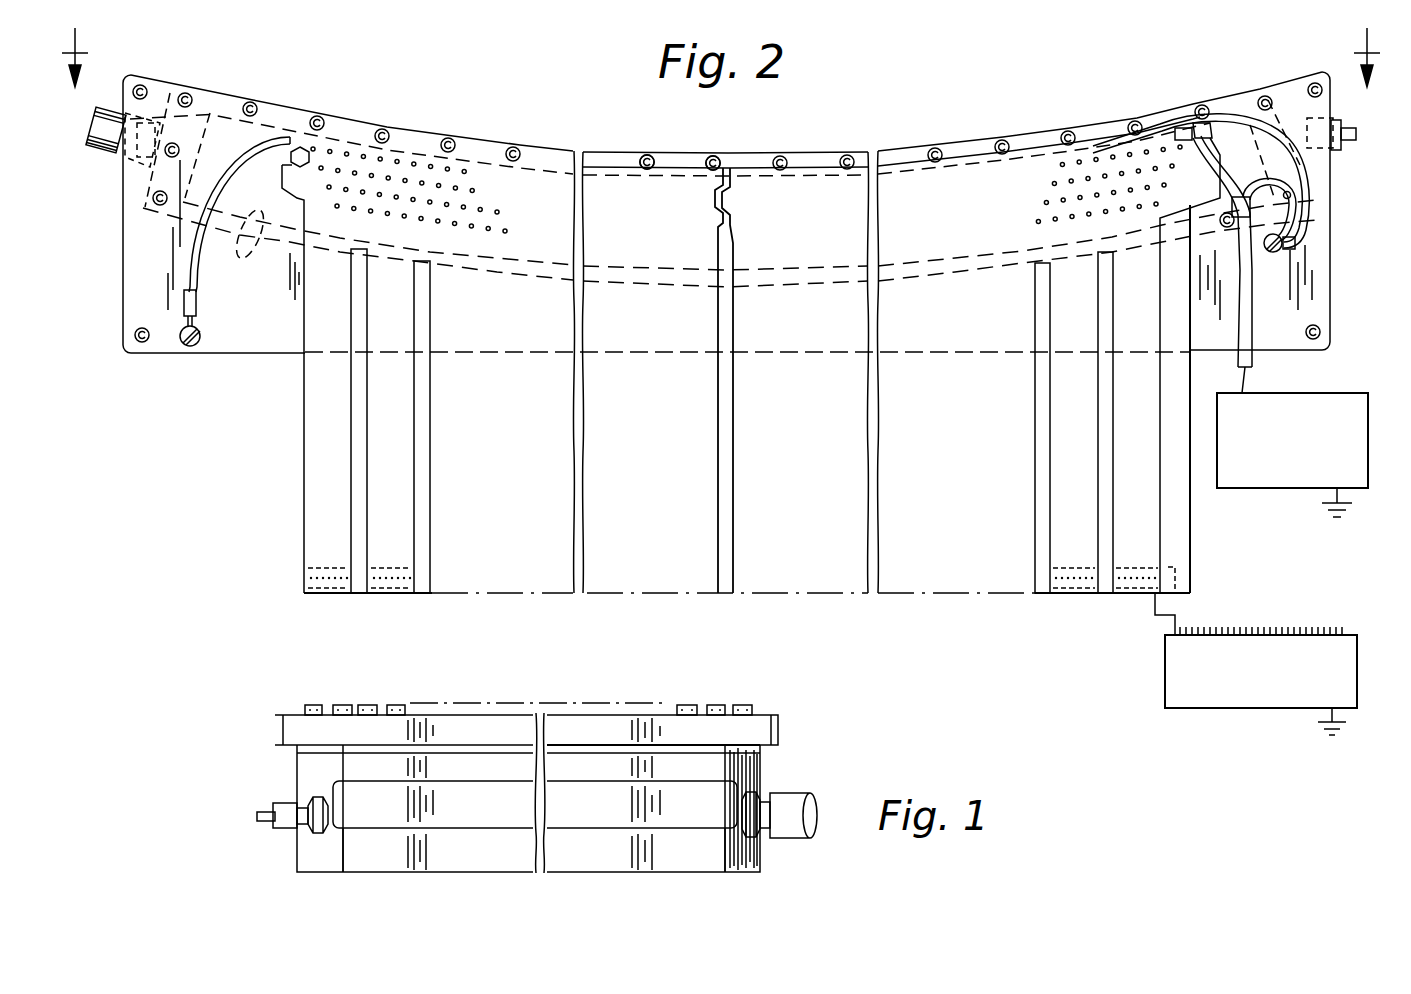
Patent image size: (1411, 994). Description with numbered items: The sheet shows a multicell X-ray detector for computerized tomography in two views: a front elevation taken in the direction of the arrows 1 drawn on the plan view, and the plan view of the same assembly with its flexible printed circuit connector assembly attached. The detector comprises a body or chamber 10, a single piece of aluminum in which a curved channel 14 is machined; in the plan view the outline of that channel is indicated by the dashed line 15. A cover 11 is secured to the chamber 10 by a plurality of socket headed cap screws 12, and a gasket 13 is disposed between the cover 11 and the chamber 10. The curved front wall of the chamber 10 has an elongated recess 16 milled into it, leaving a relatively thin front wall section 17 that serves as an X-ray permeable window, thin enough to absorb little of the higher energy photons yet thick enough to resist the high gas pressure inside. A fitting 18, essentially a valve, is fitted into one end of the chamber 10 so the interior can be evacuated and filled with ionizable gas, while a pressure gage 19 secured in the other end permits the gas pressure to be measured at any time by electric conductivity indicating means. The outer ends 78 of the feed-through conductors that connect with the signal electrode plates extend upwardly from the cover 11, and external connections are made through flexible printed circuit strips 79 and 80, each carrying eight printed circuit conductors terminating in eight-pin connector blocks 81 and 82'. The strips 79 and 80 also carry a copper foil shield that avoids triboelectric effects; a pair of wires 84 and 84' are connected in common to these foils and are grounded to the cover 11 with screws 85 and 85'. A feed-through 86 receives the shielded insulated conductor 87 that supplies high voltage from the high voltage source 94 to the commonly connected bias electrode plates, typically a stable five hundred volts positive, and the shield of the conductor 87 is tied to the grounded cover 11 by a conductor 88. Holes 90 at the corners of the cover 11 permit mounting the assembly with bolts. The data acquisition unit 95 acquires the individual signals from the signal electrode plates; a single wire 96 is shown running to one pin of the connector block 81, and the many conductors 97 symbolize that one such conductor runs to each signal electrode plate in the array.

In FIG. 2, the arrows 1 is at (721, 47).
In FIG. 1, the body or chamber 10 is at (610, 850).
In FIG. 1, the cover 11 is at (738, 731).
In FIG. 2, the socket headed cap screws 12 is at (711, 159).
In FIG. 1, the socket headed cap screws 12 is at (400, 704).
In FIG. 1, the gasket 13 is at (760, 748).
In FIG. 2, the curved channel 14 is at (227, 133).
In FIG. 2, the dashed line 15 is at (250, 240).
In FIG. 1, the elongated recess 16 is at (468, 813).
In FIG. 1, the thin front wall section 17 is at (385, 795).
In FIG. 2, the fitting 18 is at (1348, 135).
In FIG. 1, the fitting 18 is at (290, 820).
In FIG. 2, the pressure gage 19 is at (103, 135).
In FIG. 1, the pressure gage 19 is at (790, 807).
In FIG. 2, the outer ends of feed-through conductors 78 is at (402, 158).
In FIG. 2, the flexible printed circuit strip 79 is at (318, 458).
In FIG. 2, the flexible printed circuit strip 80 is at (380, 445).
In FIG. 2, the connector block 81 is at (1138, 593).
In FIG. 2, the connector block 82' is at (1055, 448).
In FIG. 2, the wire 84 is at (1201, 151).
In FIG. 2, the wire 84' is at (237, 226).
In FIG. 2, the screw 85 is at (1319, 247).
In FIG. 2, the screw 85' is at (204, 349).
In FIG. 2, the feed-through 86 is at (1194, 124).
In FIG. 2, the shielded insulated conductor 87 is at (1253, 287).
In FIG. 2, the conductor 88 is at (1293, 204).
In FIG. 2, the holes 90 is at (1316, 84).
In FIG. 2, the high voltage source 94 is at (1368, 445).
In FIG. 2, the data acquisition unit 95 is at (1357, 667).
In FIG. 2, the wire 96 is at (1158, 610).
In FIG. 2, the conductors 97 is at (1299, 629).